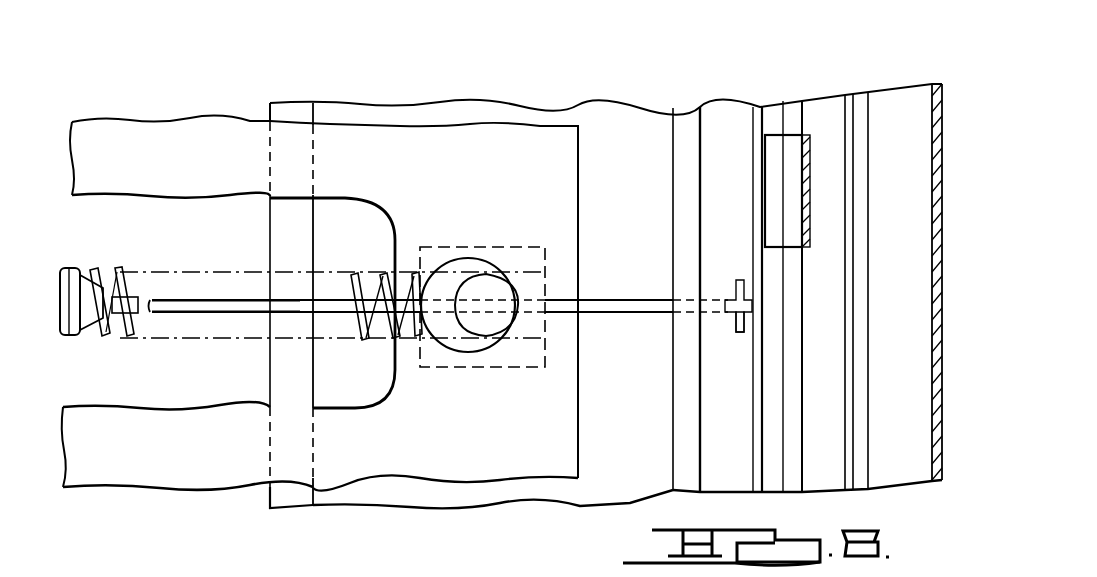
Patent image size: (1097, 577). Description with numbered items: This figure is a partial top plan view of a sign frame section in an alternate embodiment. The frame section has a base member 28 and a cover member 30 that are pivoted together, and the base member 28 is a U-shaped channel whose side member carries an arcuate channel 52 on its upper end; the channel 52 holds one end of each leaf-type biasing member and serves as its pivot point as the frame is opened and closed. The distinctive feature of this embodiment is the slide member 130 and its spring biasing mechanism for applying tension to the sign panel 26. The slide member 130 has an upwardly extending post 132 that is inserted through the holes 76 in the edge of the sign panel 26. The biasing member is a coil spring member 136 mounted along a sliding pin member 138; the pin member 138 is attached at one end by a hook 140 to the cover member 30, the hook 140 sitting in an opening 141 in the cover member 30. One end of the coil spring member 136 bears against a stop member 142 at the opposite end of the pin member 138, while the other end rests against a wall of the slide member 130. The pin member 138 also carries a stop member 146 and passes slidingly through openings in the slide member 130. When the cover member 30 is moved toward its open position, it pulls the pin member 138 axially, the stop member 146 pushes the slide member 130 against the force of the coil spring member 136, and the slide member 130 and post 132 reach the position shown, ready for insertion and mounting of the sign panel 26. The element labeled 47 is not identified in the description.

The sign panel 26 is at (172, 146).
The base member 28 is at (388, 112).
The cover member 30 is at (895, 108).
The channel 52 is at (775, 107).
The bracket 47 is at (778, 186).
The holes 76 is at (460, 260).
The post 132 is at (488, 298).
The slide member 130 is at (494, 373).
The stop member 146 is at (578, 292).
The opening 141 is at (740, 280).
The hook 140 is at (737, 333).
The coil spring member 136 is at (118, 273).
The stop member 142 is at (66, 338).
The pin member 138 is at (205, 306).